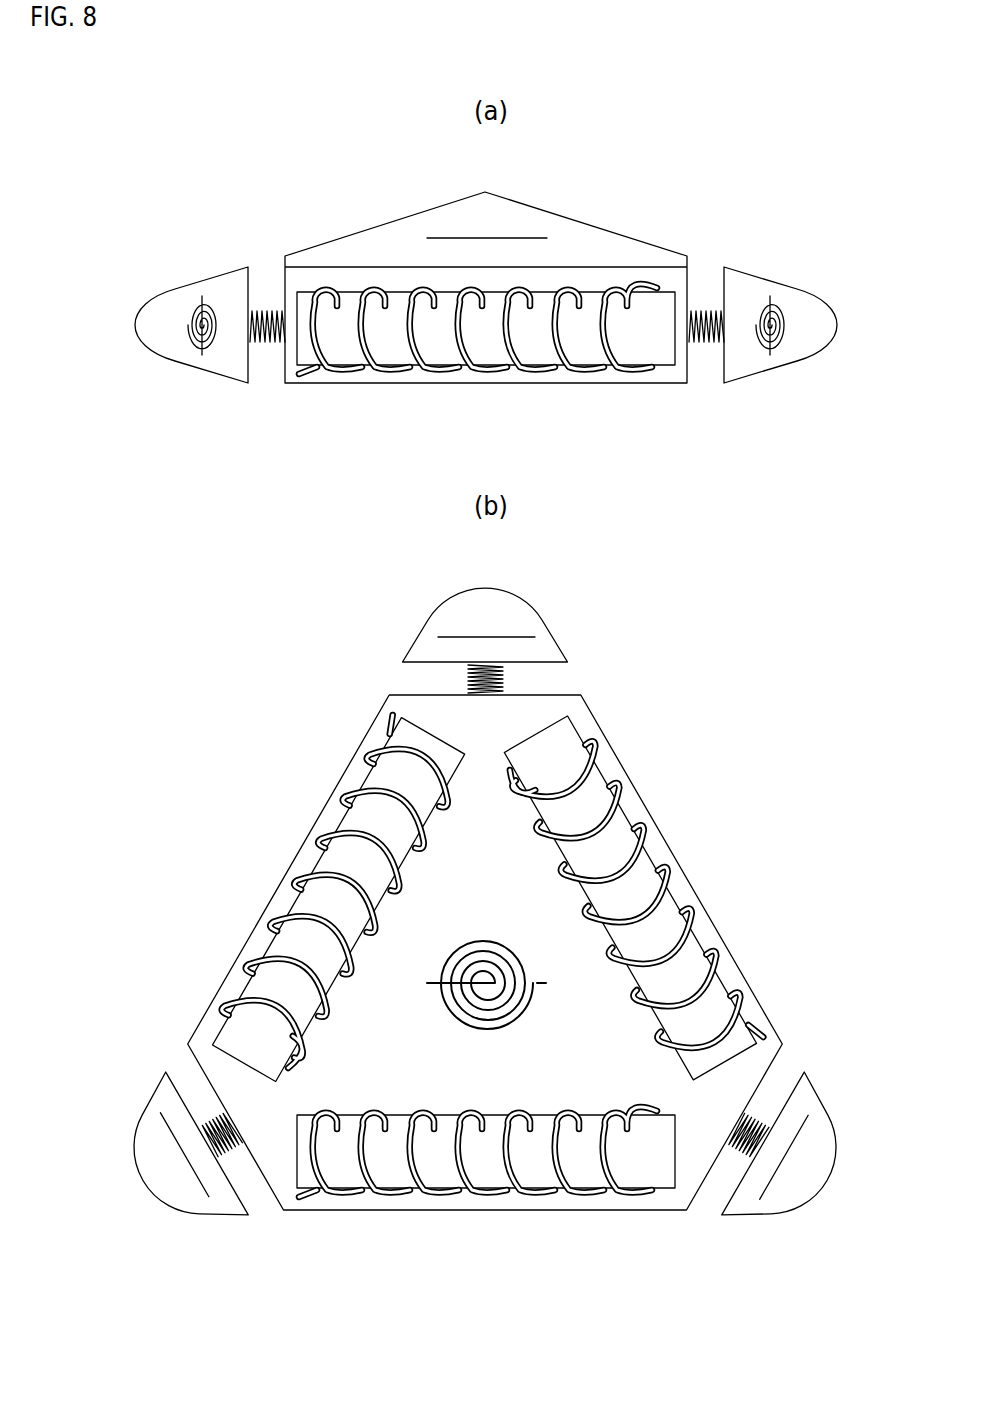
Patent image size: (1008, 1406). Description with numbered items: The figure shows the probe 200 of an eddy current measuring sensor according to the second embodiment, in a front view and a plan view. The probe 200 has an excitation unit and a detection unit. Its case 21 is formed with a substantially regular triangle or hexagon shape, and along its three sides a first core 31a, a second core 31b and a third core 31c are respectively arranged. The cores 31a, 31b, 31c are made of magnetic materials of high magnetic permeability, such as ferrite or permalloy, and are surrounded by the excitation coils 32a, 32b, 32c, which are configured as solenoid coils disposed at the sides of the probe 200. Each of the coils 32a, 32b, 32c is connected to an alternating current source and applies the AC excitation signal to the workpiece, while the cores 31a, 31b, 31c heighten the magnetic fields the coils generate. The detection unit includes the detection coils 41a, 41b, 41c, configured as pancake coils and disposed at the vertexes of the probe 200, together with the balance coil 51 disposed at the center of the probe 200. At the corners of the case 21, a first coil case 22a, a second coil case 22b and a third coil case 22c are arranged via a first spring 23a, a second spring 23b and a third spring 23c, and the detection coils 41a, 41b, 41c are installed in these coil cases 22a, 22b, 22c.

The probe 200 is at (680, 196).
The case 21 is at (513, 372).
The first coil case 22a is at (740, 283).
The second coil case 22b is at (208, 288).
The third coil case 22c is at (433, 652).
The first spring 23a is at (707, 347).
The second spring 23b is at (268, 345).
The third spring 23c is at (468, 677).
The first core 31a is at (618, 833).
The second core 31b is at (590, 352).
The third core 31c is at (383, 777).
The excitation coil 32a is at (627, 868).
The excitation coil 32b is at (422, 365).
The excitation coil 32c is at (298, 882).
The detection coil 41a is at (782, 343).
The detection coil 41b is at (195, 350).
The detection coil 41c is at (463, 635).
The balance coil 51 is at (427, 238).